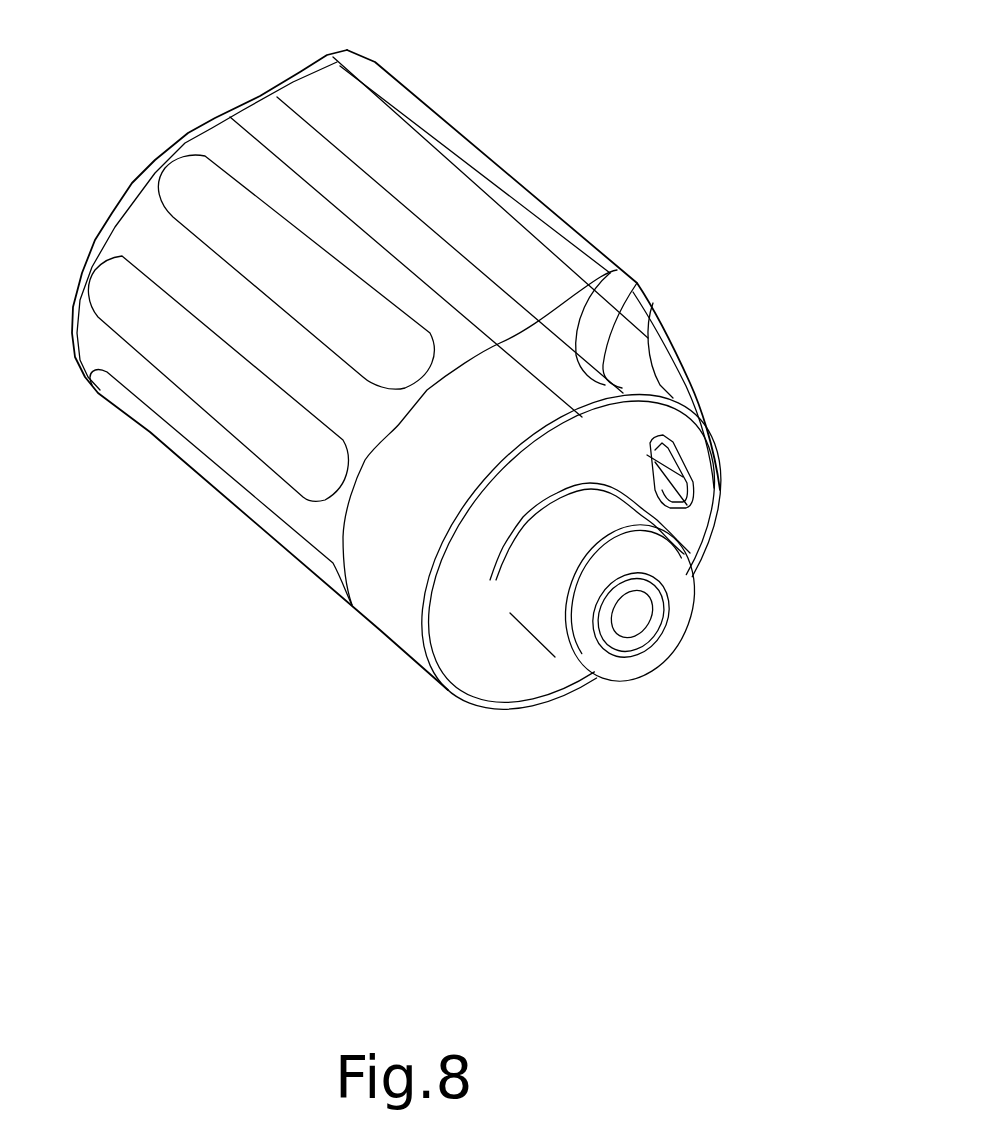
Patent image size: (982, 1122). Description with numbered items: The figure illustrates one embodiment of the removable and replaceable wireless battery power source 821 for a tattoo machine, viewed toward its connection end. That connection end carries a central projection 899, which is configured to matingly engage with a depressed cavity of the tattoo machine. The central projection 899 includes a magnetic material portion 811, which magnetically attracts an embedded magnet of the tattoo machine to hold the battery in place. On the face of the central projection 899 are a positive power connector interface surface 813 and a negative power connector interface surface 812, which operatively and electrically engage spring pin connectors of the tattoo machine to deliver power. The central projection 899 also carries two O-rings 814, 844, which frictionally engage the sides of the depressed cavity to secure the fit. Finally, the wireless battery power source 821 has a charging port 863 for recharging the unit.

The wireless battery power source 821 is at (451, 88).
The magnetic material portion 811 is at (700, 582).
The charging port 863 is at (687, 467).
The O-ring 844 is at (507, 593).
The O-ring 814 is at (550, 653).
The negative power connector interface surface 812 is at (668, 606).
The positive power connector interface surface 813 is at (630, 620).
The central projection 899 is at (593, 697).